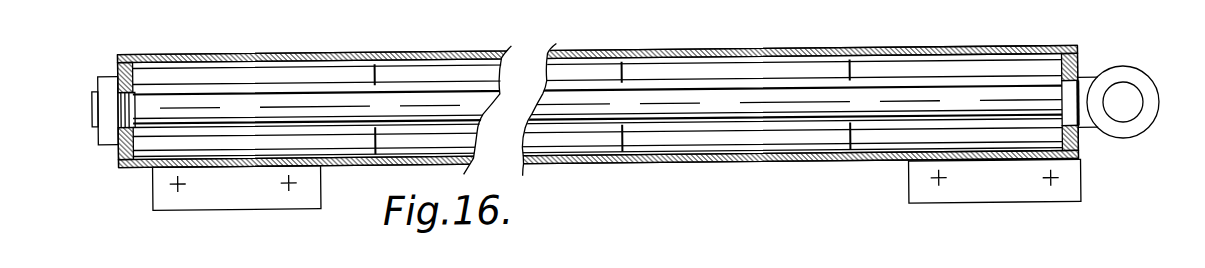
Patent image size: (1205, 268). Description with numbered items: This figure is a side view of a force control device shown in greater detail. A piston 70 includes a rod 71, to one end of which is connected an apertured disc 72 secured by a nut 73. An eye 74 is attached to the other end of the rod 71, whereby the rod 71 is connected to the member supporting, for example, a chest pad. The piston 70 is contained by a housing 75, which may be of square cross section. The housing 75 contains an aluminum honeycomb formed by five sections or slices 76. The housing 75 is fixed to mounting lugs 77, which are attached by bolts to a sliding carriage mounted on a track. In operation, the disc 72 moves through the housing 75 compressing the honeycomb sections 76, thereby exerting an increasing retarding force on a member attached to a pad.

The piston 70 is at (208, 103).
The rod 71 is at (461, 97).
The apertured disc 72 is at (138, 139).
The nut 73 is at (106, 140).
The eye 74 is at (1117, 132).
The housing 75 is at (437, 50).
The honeycomb sections 76 is at (669, 136).
The mounting lugs 77 is at (222, 183).